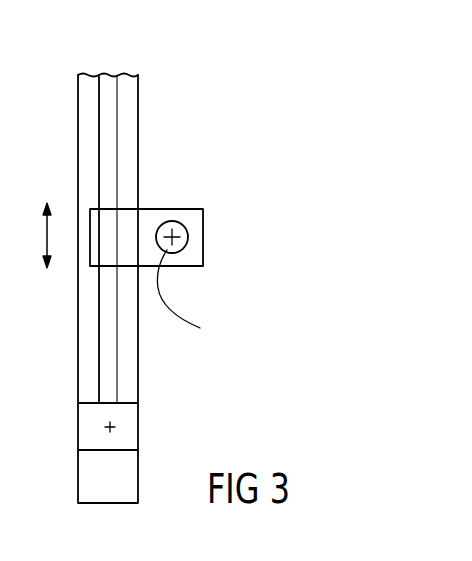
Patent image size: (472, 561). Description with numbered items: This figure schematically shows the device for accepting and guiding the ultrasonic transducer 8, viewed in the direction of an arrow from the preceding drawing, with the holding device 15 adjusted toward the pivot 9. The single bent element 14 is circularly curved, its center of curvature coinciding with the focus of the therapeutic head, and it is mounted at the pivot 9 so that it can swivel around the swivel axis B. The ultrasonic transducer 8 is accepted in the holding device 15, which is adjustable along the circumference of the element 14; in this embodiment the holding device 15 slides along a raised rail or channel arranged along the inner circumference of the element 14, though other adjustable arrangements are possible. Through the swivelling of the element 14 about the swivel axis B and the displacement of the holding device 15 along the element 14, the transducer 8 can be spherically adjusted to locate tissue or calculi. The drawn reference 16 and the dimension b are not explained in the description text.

The bent element 14 is at (88, 117).
The inner tube 16 is at (107, 92).
The holding device 15 is at (138, 227).
The ultrasonic transducer 8 is at (188, 238).
The pivot 9 is at (132, 430).
The swivel axis B is at (105, 430).
The distance b is at (44, 234).